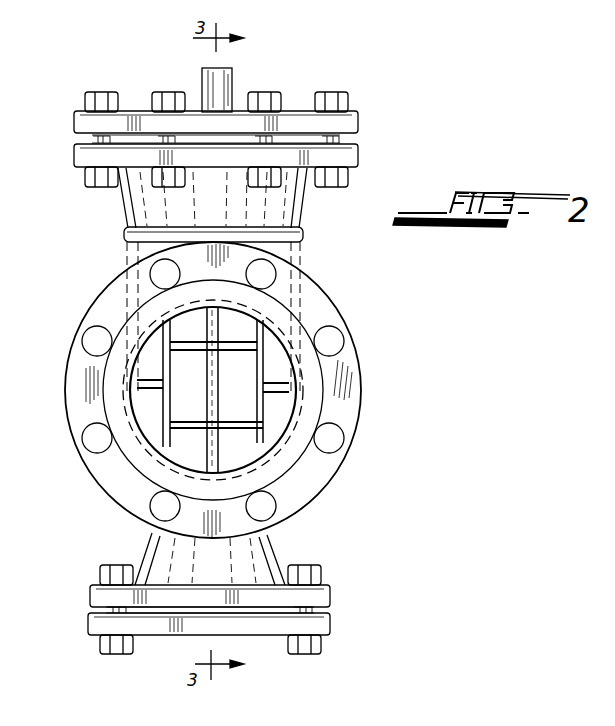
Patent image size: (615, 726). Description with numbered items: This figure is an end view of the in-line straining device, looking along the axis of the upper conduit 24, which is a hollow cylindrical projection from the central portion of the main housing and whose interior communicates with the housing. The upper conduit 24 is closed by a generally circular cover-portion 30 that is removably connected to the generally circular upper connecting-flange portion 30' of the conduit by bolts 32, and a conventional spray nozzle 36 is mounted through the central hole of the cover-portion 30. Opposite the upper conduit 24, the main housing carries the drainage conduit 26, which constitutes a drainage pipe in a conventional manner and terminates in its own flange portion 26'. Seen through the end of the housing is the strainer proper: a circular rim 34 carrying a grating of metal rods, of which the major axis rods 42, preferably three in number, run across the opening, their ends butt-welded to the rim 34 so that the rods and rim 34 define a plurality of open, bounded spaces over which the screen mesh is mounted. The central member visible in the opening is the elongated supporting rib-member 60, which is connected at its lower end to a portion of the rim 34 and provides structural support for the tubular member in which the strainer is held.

The upper conduit 24 is at (303, 196).
The drainage conduit 26 is at (210, 565).
The lower companion flange plate 26' is at (227, 626).
The cover-portion 30 is at (238, 122).
The upper connecting-flange portion 30' is at (237, 159).
The bolts 32 is at (168, 90).
The rim 34 is at (287, 407).
The spray nozzle 36 is at (268, 76).
The major axis rods 42 is at (158, 385).
The supporting rib-member 60 is at (224, 341).